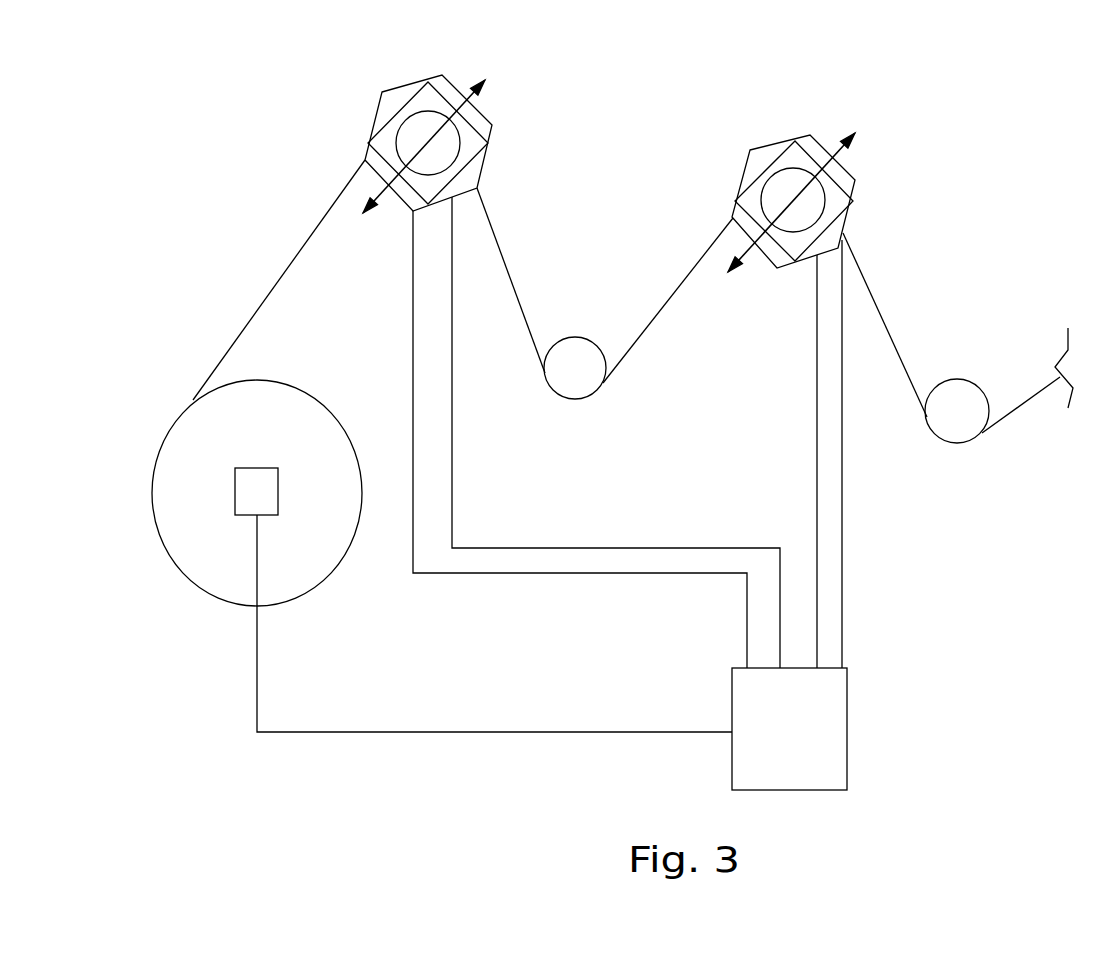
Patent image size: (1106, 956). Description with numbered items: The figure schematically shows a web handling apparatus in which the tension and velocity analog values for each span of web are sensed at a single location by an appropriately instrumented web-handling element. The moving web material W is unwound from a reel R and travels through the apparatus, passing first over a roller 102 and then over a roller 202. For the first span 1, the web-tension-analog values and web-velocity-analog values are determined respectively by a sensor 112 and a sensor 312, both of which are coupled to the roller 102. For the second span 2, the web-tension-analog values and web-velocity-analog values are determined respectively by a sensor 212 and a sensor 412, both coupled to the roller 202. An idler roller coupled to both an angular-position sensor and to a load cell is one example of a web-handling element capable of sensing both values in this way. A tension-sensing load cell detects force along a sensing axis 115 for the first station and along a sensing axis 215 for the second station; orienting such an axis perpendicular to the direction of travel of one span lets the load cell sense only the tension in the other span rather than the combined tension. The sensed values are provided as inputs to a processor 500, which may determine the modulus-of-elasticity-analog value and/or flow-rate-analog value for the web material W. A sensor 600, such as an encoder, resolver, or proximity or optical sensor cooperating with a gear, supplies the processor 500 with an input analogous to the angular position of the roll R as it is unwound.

The first span 1 is at (298, 207).
The second span 2 is at (690, 252).
The web material W is at (250, 322).
The reel R is at (330, 538).
The roller 102 is at (452, 147).
The sensor 112 is at (432, 100).
The sensing axis 115 is at (387, 193).
The sensor 312 is at (392, 103).
The roller 202 is at (810, 217).
The sensor 212 is at (797, 160).
The sensing axis 215 is at (755, 242).
The sensor 412 is at (767, 157).
The processor 500 is at (806, 747).
The sensor 600 is at (233, 493).